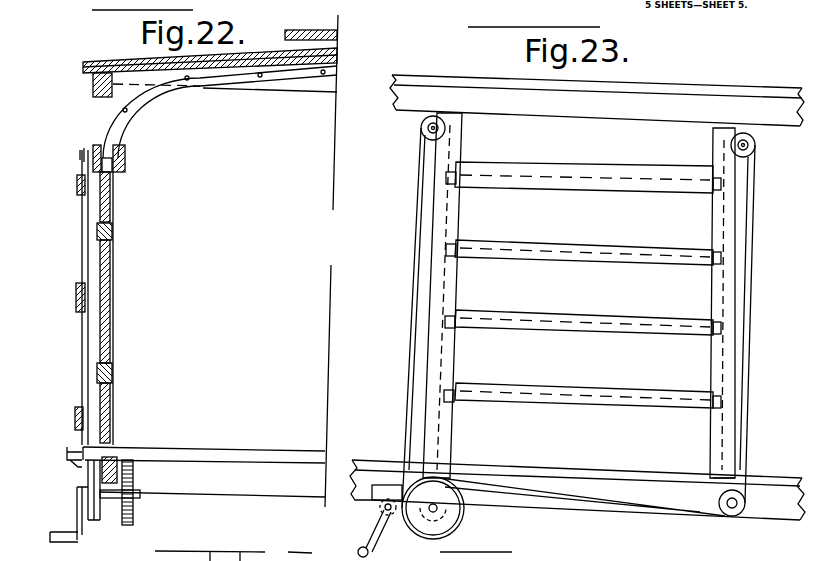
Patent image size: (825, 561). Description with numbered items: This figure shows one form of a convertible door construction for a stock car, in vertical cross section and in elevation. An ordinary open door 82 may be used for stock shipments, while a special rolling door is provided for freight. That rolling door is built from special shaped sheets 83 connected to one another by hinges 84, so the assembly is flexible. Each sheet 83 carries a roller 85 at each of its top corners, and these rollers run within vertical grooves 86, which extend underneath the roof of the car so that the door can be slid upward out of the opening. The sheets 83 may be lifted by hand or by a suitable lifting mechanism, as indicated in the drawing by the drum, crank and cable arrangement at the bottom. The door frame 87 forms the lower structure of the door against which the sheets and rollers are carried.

In FIG. 22, the open door 82 is at (85, 257).
In FIG. 22, the special shaped sheets 83 is at (113, 195).
In FIG. 23, the special shaped sheets 83 is at (584, 305).
In FIG. 22, the hinges 84 is at (110, 232).
In FIG. 23, the roller 85 is at (450, 185).
In FIG. 22, the vertical grooves 86 is at (232, 80).
In FIG. 23, the door frame 87 is at (746, 519).